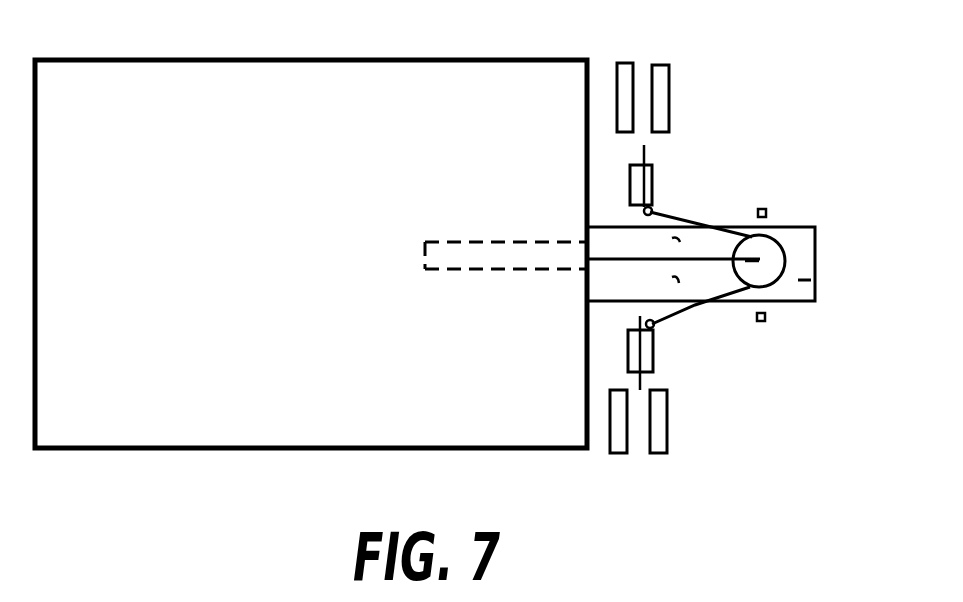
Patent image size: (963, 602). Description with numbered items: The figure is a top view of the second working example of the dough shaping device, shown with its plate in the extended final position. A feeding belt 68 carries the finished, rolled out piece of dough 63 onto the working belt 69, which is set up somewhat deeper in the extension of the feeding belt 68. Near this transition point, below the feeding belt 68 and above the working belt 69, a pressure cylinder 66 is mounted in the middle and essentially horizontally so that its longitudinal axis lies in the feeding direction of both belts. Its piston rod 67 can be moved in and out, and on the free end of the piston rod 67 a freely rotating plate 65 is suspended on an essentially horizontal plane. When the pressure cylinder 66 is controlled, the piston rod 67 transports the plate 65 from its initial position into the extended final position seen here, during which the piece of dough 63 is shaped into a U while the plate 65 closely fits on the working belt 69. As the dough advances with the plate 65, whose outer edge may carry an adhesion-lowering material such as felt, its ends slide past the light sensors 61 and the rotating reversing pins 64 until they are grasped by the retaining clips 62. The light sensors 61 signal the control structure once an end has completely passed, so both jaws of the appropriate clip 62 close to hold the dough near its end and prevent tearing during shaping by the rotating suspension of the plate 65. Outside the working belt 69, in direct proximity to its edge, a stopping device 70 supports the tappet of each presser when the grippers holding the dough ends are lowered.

The light sensors 61 is at (617, 70).
The retaining clips 62 is at (654, 178).
The piece of dough 63 is at (734, 226).
The reversing pins 64 is at (656, 210).
The freely rotating plate 65 is at (786, 254).
The pressure cylinder 66 is at (477, 258).
The piston rod 67 is at (687, 320).
The feeding belt 68 is at (250, 423).
The working belt 69 is at (815, 292).
The stopping device 70 is at (766, 210).